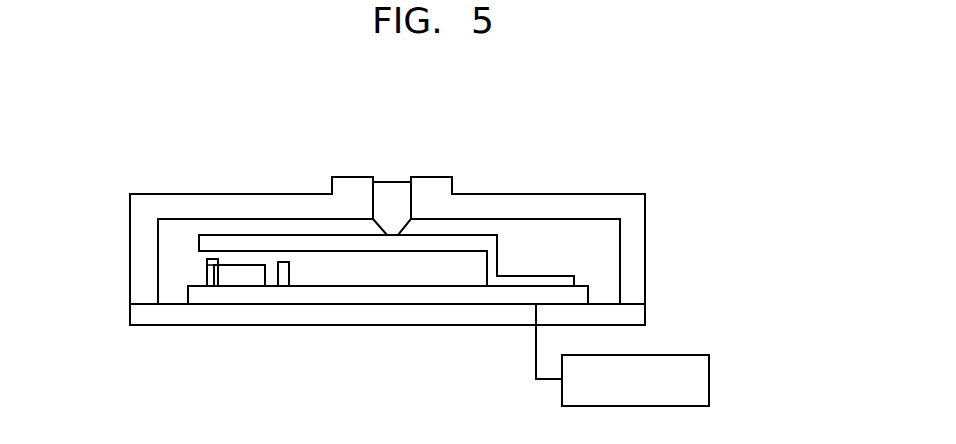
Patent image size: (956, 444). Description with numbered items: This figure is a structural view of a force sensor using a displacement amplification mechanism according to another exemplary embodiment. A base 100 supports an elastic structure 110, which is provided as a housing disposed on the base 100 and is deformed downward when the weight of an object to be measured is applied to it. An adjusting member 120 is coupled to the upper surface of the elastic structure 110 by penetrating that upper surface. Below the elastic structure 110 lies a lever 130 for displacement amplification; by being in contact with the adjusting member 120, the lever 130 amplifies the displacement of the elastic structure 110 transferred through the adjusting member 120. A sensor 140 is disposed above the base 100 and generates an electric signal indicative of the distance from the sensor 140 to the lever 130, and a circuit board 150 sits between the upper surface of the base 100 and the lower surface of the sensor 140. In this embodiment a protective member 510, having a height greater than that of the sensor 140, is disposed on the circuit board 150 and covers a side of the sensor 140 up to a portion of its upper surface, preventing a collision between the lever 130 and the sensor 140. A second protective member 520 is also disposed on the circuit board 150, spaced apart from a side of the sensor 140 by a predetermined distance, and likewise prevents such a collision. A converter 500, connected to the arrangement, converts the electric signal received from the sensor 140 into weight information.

The base 100 is at (620, 317).
The elastic structure 110 is at (537, 208).
The adjusting member 120 is at (385, 198).
The lever 130 is at (445, 240).
The sensor 140 is at (240, 275).
The circuit board 150 is at (213, 297).
The converter 500 is at (709, 379).
The protective member 510 is at (212, 262).
The second protective member 520 is at (285, 273).